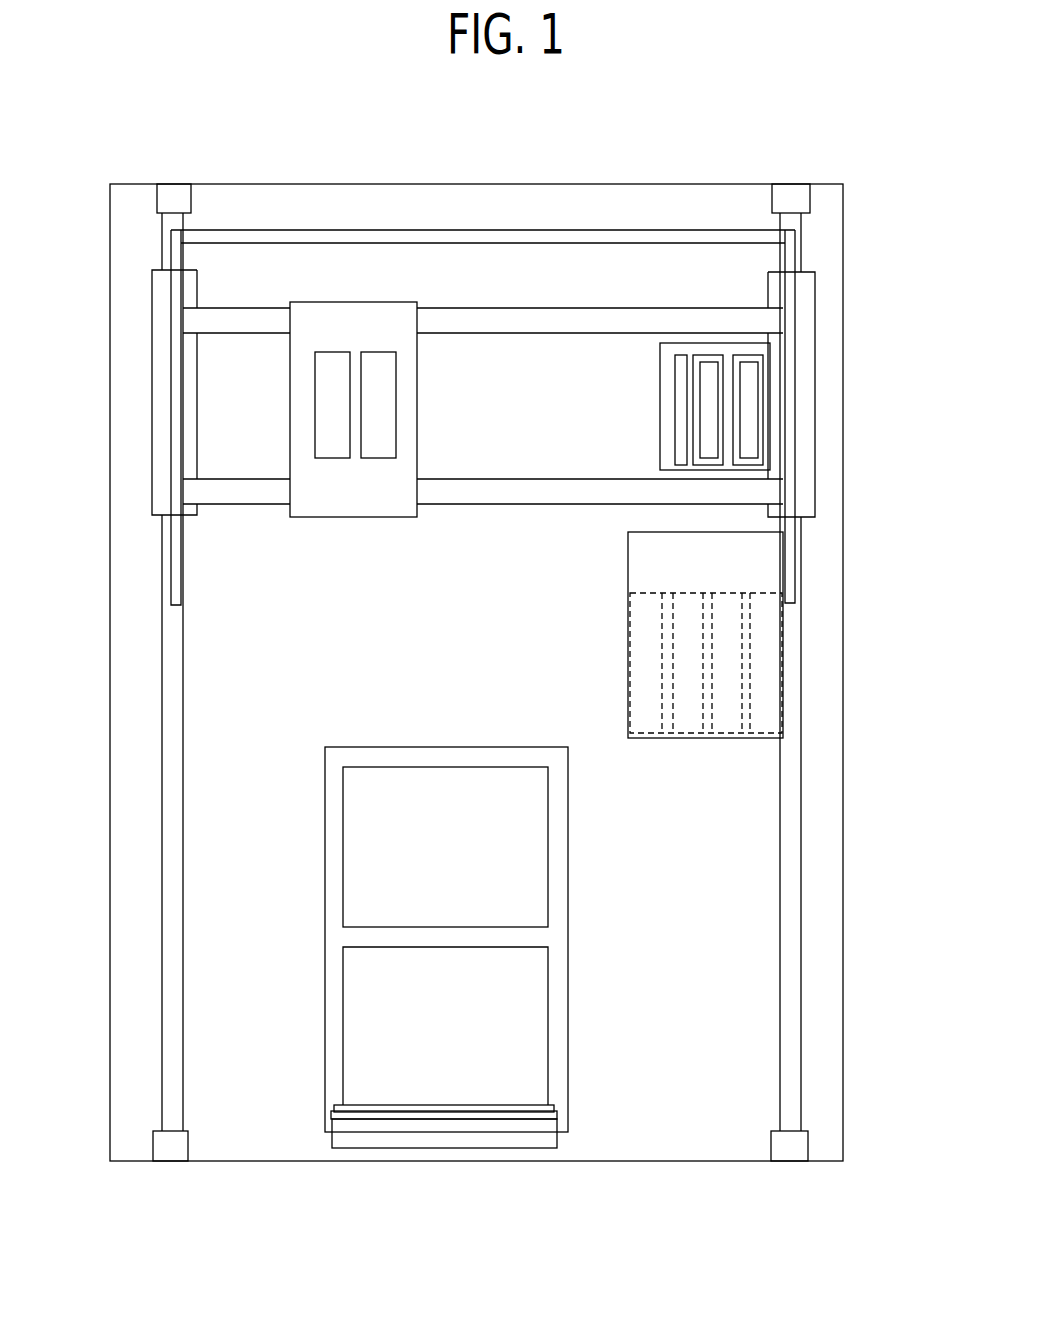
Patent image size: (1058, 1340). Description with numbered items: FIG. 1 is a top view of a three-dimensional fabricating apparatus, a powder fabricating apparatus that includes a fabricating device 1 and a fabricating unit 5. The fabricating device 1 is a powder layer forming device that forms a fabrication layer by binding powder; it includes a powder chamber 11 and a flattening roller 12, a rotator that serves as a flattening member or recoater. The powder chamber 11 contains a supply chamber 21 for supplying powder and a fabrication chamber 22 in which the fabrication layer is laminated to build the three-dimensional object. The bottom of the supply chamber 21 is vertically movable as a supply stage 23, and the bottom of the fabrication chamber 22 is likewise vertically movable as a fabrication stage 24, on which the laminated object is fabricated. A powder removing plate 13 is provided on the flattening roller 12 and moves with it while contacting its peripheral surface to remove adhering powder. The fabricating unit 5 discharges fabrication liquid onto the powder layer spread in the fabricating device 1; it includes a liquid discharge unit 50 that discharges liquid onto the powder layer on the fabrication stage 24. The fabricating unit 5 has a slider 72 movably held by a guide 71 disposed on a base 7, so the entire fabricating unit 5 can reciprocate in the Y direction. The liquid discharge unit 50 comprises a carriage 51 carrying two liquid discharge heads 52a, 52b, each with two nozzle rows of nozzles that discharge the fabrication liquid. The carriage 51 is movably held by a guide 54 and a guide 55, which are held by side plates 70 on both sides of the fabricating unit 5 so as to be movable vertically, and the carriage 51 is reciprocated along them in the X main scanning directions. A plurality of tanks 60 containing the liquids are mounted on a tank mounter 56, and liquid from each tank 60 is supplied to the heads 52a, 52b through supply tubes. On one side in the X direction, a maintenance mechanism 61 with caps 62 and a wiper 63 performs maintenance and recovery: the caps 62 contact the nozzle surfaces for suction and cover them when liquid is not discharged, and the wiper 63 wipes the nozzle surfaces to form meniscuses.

The fabricating device 1 is at (346, 1158).
The fabricating unit 5 is at (145, 255).
The base 7 is at (828, 932).
The powder chamber 11 is at (436, 939).
The flattening roller 12 is at (413, 1137).
The powder removing plate 13 is at (453, 1115).
The supply chamber 21 is at (352, 1005).
The fabrication chamber 22 is at (348, 832).
The supply stage 23 is at (527, 1013).
The fabrication stage 24 is at (527, 858).
The liquid discharge unit 50 is at (354, 353).
The carriage 51 is at (325, 315).
The liquid discharge head 52a is at (340, 450).
The liquid discharge head 52b is at (377, 448).
The guide 54 is at (505, 317).
The guide 55 is at (513, 497).
The tank mounter 56 is at (770, 635).
The tank 60 is at (765, 698).
The maintenance mechanism 61 is at (745, 407).
The cap 62 is at (748, 418).
The wiper 63 is at (675, 422).
The side plate 70 is at (172, 440).
The guide 71 is at (160, 625).
The slider 72 is at (158, 390).